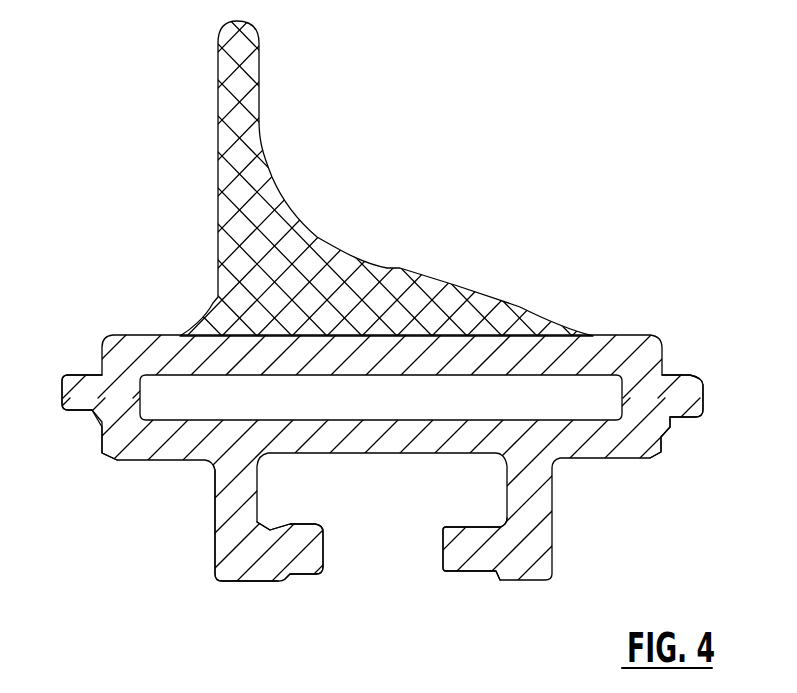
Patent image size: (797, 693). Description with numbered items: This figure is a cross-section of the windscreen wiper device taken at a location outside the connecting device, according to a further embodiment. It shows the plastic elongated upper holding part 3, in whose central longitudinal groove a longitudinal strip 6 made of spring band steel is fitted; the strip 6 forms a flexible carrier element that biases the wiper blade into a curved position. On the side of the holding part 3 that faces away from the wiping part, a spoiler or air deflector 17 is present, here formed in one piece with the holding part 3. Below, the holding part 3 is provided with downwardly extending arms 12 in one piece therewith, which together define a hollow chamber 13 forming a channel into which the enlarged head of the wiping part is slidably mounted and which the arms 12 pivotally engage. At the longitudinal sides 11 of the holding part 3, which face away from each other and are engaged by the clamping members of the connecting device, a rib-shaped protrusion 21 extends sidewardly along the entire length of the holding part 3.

The holding part 3 is at (645, 352).
The longitudinal strip 6 is at (583, 395).
The spoiler 17 is at (260, 151).
The rib-shaped protrusion 21 is at (62, 380).
The longitudinal sides 11 is at (100, 438).
The arms 12 is at (298, 563).
The hollow chamber 13 is at (280, 492).